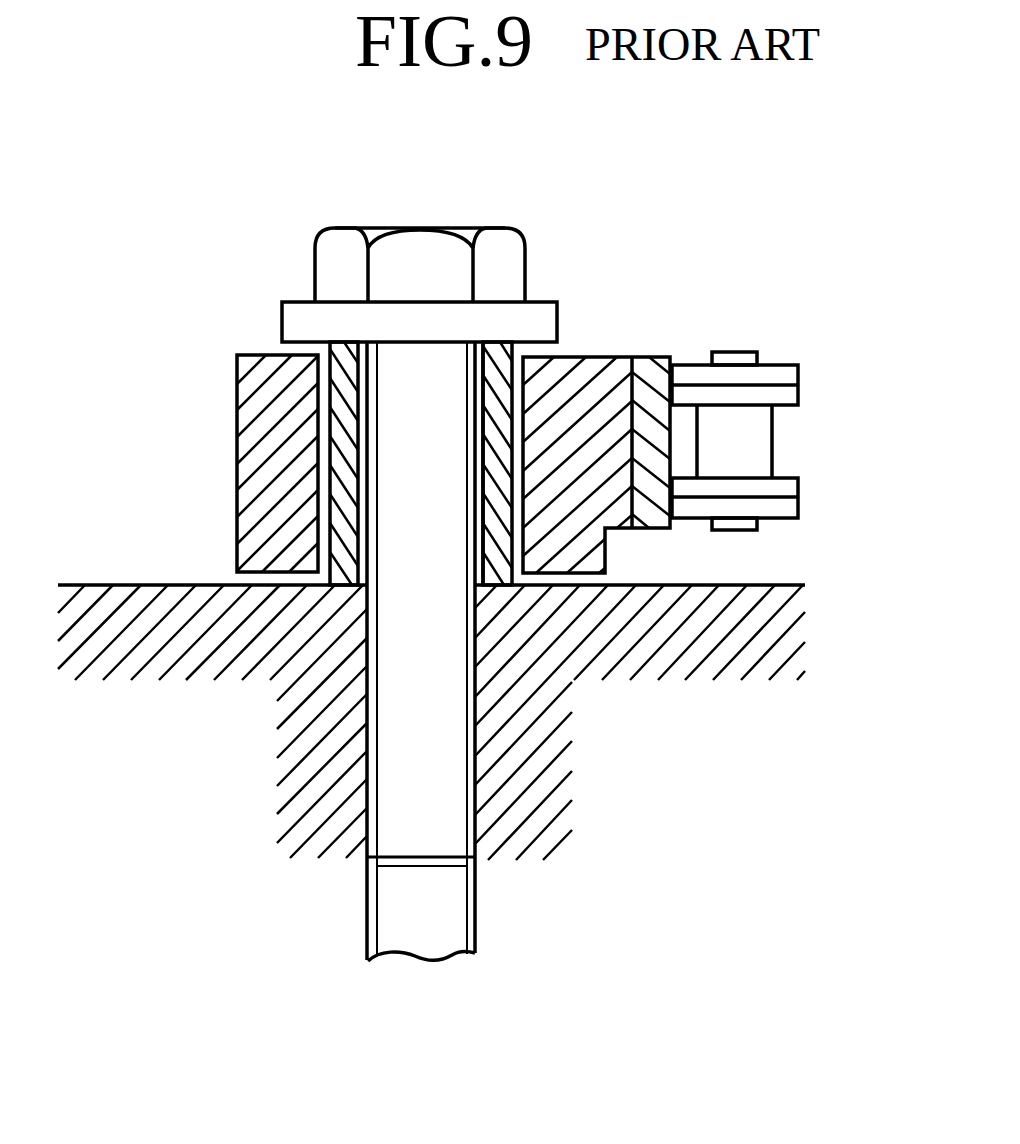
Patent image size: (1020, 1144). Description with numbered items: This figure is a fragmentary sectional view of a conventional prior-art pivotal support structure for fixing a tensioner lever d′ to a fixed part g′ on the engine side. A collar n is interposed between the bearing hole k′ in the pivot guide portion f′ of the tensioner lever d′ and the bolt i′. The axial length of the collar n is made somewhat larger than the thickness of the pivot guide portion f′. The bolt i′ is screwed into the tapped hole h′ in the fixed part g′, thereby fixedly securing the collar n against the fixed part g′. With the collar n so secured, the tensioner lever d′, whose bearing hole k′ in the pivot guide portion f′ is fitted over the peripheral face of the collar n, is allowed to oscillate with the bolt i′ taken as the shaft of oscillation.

The tensioner lever d′ is at (597, 368).
The pivot guide portion f′ is at (222, 379).
The fixed part on the engine side g′ is at (743, 585).
The tapped hole h′ is at (478, 932).
The bolt i′ is at (448, 813).
The bearing hole k′ is at (326, 460).
The collar n is at (500, 344).